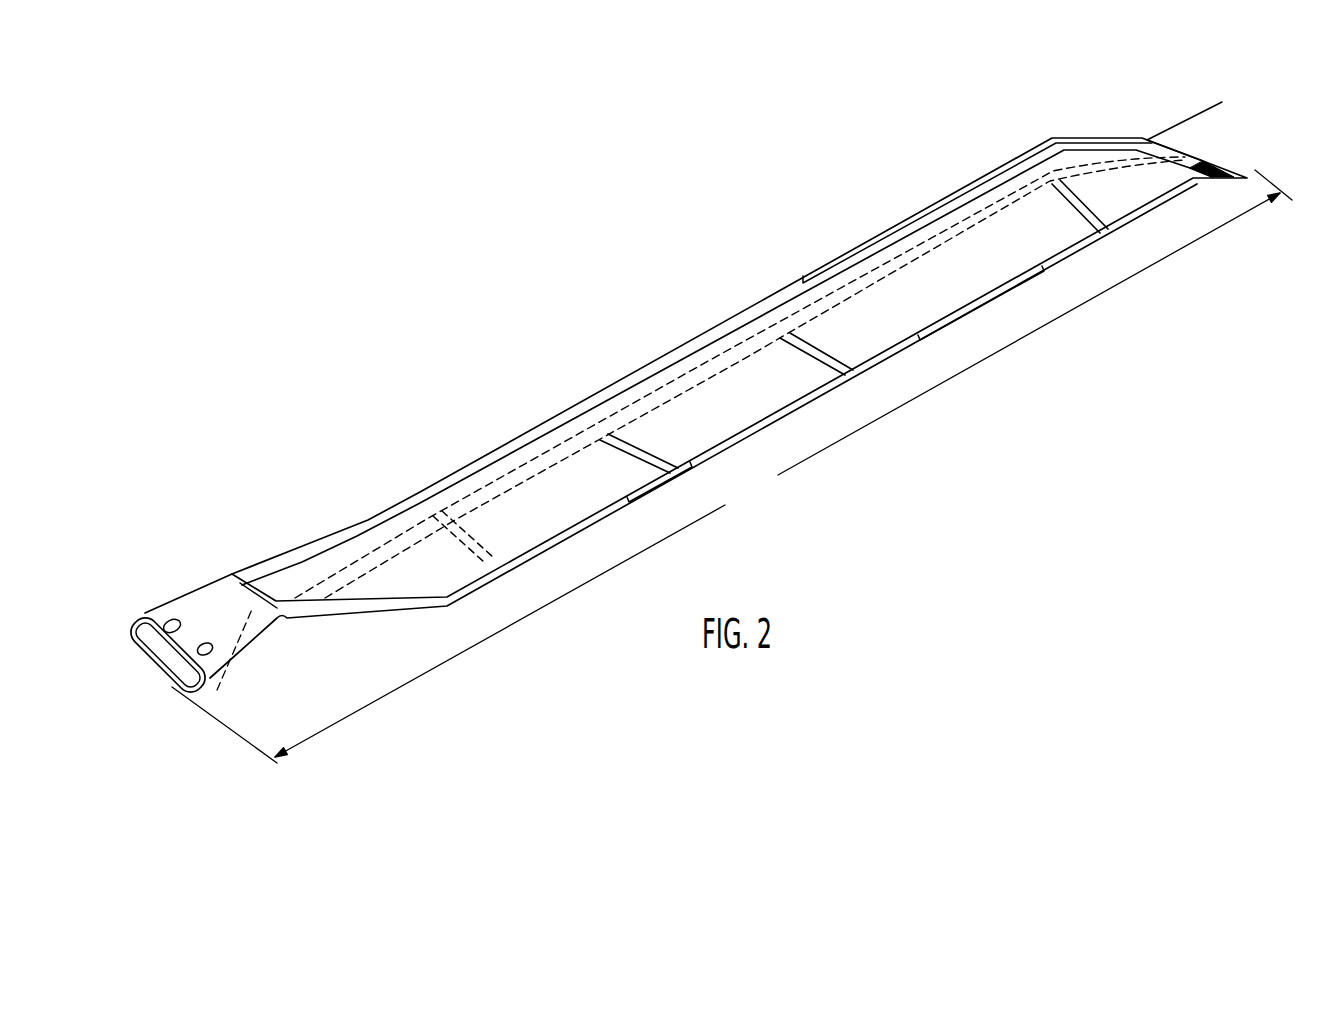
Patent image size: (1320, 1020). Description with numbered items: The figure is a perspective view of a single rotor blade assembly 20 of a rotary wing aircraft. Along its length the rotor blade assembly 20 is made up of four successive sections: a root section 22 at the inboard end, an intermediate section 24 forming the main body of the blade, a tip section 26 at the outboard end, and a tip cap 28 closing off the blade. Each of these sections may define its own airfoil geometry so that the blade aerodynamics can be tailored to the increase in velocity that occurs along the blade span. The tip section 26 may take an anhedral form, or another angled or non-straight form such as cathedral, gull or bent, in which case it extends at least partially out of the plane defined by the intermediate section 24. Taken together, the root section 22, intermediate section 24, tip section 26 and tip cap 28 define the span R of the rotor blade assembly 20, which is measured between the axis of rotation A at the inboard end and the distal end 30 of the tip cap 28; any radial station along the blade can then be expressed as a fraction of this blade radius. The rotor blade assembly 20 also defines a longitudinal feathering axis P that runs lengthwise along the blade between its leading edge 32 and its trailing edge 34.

The rotor blade assembly 20 is at (657, 263).
The root section 22 is at (274, 557).
The intermediate section 24 is at (648, 348).
The tip section 26 is at (1033, 132).
The tip cap 28 is at (1226, 143).
The distal end 30 is at (1231, 171).
The leading edge 32 is at (763, 298).
The trailing edge 34 is at (820, 402).
The longitudinal feathering axis P is at (1190, 118).
The span R is at (732, 466).
The axis of rotation A is at (236, 641).